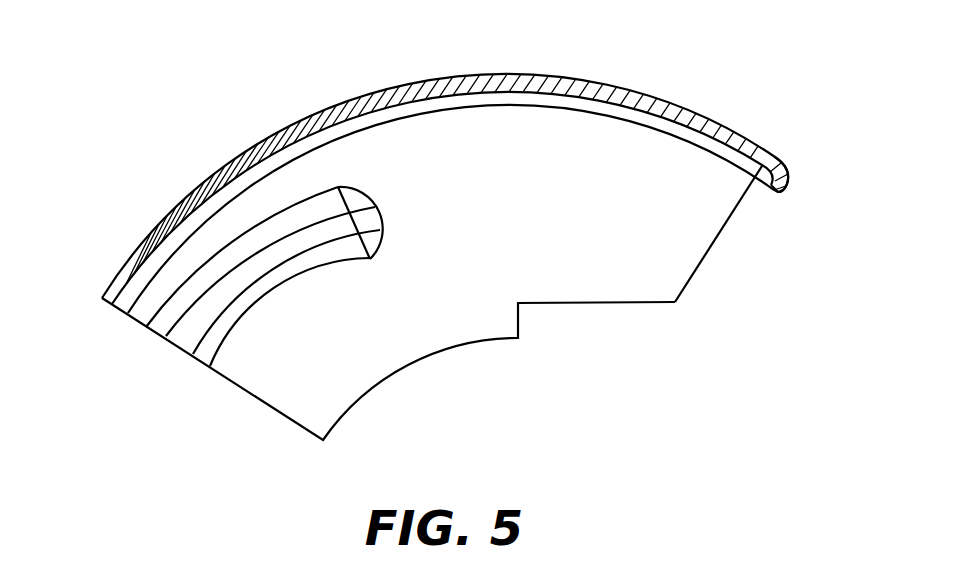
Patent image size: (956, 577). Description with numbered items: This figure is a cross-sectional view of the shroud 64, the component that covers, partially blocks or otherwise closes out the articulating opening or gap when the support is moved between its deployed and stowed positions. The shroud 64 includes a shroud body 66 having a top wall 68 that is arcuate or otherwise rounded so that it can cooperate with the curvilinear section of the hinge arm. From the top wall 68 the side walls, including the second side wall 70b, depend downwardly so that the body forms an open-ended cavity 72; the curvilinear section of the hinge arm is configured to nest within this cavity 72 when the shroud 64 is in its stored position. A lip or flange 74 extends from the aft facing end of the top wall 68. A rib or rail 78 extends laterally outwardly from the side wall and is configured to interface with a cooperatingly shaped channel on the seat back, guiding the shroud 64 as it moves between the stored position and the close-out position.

The shroud 64 is at (438, 161).
The shroud body 66 is at (178, 250).
The top wall 68 is at (606, 82).
The second side wall 70b is at (666, 293).
The cavity 72 is at (575, 250).
The lip or flange 74 is at (778, 193).
The rib or rail 78 is at (212, 297).